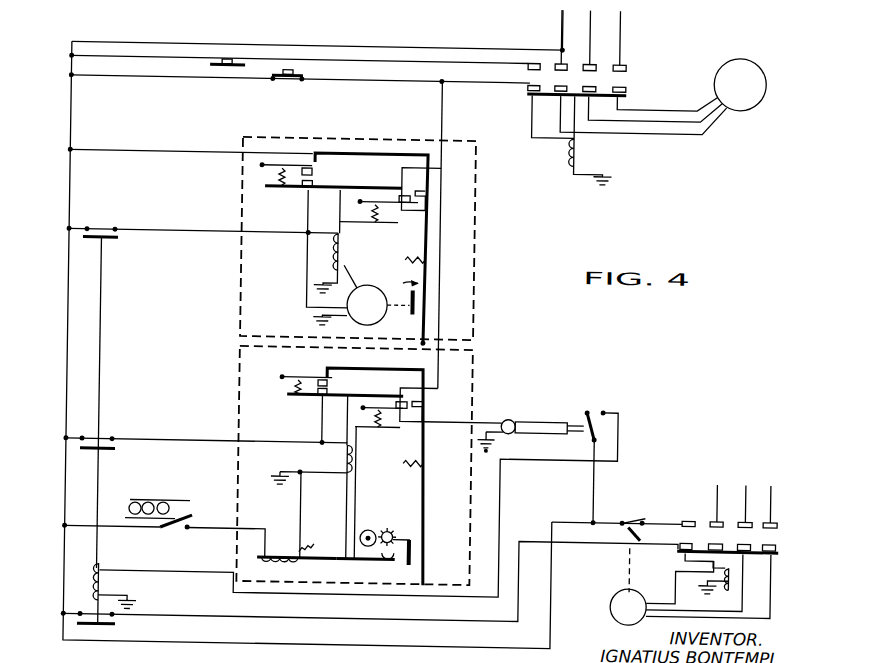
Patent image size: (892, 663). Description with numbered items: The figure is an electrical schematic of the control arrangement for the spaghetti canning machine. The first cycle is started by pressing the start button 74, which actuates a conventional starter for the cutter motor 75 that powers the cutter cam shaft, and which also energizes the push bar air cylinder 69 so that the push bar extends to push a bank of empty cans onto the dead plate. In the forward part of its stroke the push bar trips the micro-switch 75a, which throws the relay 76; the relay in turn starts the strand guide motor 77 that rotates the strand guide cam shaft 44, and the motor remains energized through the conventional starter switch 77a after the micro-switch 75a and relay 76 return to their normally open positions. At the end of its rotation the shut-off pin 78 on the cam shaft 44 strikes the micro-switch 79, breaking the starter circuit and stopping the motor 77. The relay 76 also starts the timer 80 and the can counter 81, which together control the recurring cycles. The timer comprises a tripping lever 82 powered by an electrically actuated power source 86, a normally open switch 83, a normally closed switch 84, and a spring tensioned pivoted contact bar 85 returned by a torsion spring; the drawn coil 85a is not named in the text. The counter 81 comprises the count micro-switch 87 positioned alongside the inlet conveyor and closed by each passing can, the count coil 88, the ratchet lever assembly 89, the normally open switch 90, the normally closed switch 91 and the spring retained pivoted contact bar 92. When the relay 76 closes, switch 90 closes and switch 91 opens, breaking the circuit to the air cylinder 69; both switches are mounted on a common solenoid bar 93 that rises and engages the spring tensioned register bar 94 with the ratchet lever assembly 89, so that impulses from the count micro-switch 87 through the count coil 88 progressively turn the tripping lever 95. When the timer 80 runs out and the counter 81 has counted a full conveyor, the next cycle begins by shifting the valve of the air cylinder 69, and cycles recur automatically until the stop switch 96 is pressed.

The stop switch 96 is at (223, 60).
The start button 74 is at (287, 70).
The cutter motor 75 is at (756, 49).
The normally open switch 83 is at (318, 174).
The normally closed switch 84 is at (403, 183).
The contact bar 85 is at (433, 224).
The coil 85a is at (347, 263).
The tripping lever 82 is at (420, 296).
The electrically actuated power source 86 is at (386, 313).
The timer 80 is at (482, 249).
The can counter 81 is at (482, 359).
The normally open switch 90 is at (287, 376).
The normally closed switch 91 is at (431, 400).
The contact bar 92 is at (431, 502).
The solenoid bar 93 is at (360, 460).
The ratchet lever assembly 89 is at (408, 505).
The tripping lever 95 is at (418, 548).
The count coil 88 is at (297, 564).
The register bar 94 is at (384, 554).
The push bar air cylinder 69 is at (531, 412).
The micro-switch 75a is at (594, 401).
The micro-switch 79 is at (633, 511).
The shut-off pin 78 is at (647, 533).
The strand guide cam shaft 44 is at (635, 536).
The strand guide motor 77 is at (631, 582).
The starter switch 77a is at (746, 556).
The count micro-switch 87 is at (172, 475).
The relay 76 is at (109, 583).